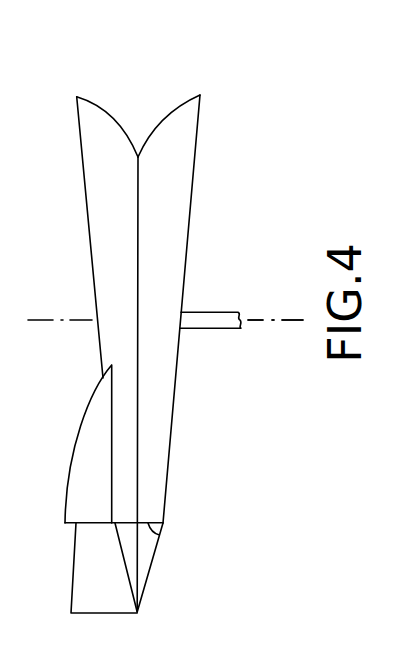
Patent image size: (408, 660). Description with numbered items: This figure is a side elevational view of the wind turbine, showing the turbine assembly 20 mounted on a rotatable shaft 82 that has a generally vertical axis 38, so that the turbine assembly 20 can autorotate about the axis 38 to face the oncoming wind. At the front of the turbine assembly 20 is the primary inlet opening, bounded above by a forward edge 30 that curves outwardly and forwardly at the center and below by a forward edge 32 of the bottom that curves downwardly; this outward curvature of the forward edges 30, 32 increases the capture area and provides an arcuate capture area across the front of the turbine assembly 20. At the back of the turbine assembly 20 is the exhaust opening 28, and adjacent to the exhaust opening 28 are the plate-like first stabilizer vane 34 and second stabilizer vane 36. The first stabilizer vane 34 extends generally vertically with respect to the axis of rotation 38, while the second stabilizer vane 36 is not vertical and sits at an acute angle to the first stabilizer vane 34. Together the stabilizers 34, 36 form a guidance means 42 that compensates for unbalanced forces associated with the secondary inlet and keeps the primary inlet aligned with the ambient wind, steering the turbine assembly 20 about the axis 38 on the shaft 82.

The turbine assembly 20 is at (123, 288).
The exhaust opening 28 is at (160, 535).
The forward edge of the primary inlet opening 30 is at (93, 100).
The forward edge of the bottom 32 is at (187, 100).
The first stabilizer vane 34 is at (85, 582).
The second stabilizer vane 36 is at (80, 487).
The vertical axis 38 is at (292, 320).
The guidance means 42 is at (95, 505).
The rotatable shaft 82 is at (217, 312).